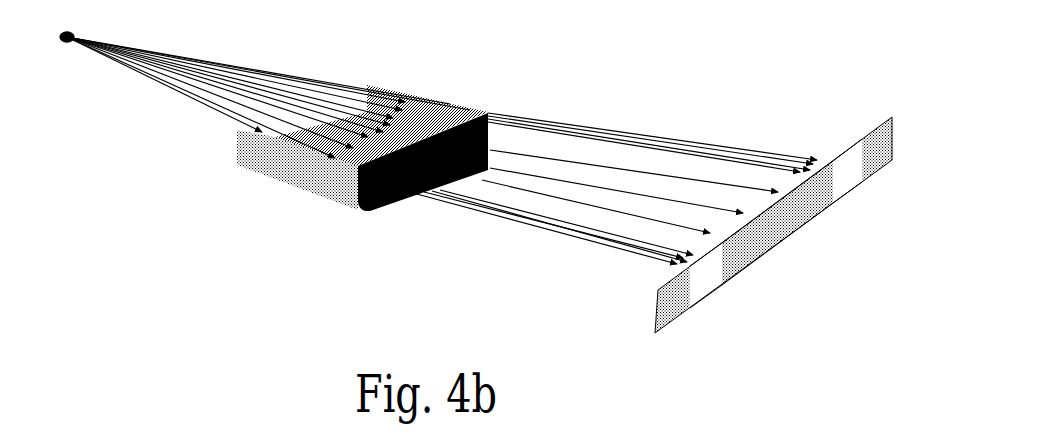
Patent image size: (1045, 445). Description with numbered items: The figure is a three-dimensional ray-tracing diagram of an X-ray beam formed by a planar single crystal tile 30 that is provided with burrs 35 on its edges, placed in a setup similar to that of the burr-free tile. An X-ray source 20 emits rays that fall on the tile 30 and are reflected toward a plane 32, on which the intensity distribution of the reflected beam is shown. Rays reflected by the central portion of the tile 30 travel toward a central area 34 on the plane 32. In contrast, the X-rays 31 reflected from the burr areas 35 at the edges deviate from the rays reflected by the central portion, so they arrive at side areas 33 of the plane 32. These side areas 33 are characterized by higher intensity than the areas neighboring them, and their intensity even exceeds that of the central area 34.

The X-ray source 20 is at (59, 40).
The planar single crystal tile 30 is at (393, 200).
The X-rays 31 is at (537, 227).
The plane 32 is at (893, 140).
The side areas 33 is at (705, 283).
The central area 34 is at (795, 215).
The burrs 35 is at (237, 143).